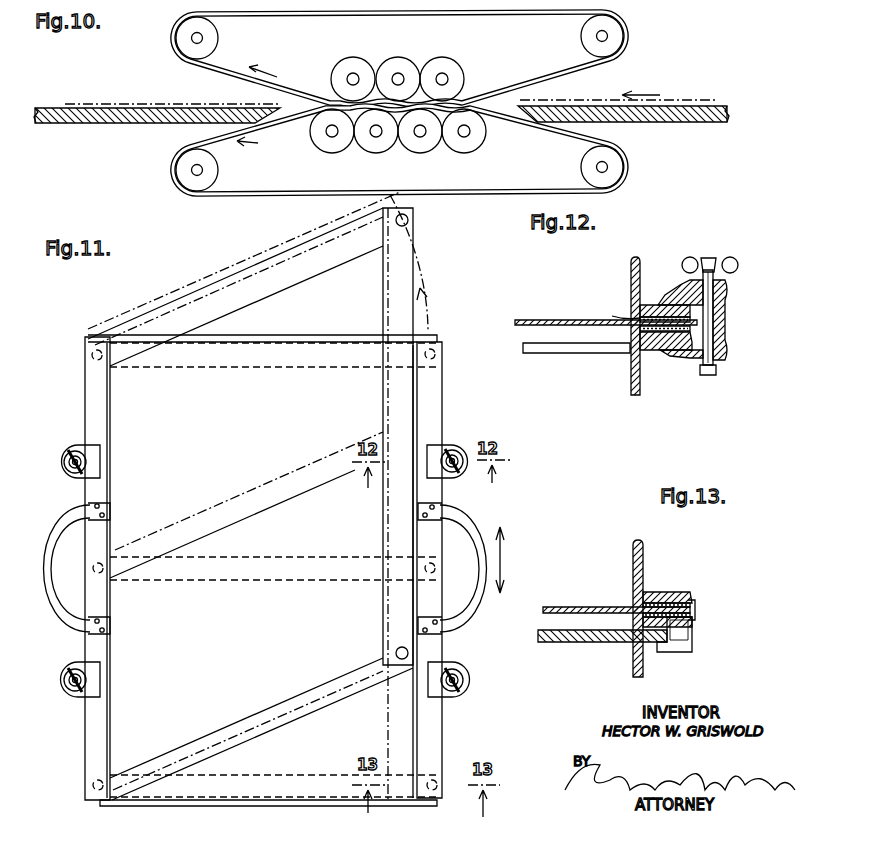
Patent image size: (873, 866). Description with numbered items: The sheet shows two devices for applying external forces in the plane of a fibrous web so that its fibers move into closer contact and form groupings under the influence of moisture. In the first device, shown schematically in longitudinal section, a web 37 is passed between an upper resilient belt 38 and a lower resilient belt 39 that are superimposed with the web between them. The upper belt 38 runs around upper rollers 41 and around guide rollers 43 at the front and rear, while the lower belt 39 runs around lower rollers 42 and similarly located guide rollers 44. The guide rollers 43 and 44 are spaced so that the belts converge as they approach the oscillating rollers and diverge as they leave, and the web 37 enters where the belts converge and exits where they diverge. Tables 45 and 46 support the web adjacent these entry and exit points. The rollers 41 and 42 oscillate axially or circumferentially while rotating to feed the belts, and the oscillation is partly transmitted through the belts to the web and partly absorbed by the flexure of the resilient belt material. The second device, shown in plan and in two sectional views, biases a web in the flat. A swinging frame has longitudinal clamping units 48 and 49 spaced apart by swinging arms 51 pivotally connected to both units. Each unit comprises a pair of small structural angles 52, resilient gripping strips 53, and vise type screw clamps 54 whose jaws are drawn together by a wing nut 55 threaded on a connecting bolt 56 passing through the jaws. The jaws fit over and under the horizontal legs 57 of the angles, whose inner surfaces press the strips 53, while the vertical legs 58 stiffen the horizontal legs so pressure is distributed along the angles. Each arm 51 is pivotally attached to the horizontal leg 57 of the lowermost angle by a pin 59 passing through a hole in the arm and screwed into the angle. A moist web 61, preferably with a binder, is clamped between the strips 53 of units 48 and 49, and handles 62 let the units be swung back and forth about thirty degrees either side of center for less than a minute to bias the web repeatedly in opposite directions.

In FIG. 10, the web 37 is at (526, 101).
In FIG. 10, the upper resilient belt 38 is at (526, 63).
In FIG. 10, the lower resilient belt 39 is at (537, 124).
In FIG. 10, the upper rollers 41 is at (383, 63).
In FIG. 10, the lower rollers 42 is at (468, 149).
In FIG. 10, the upper guide rollers 43 is at (184, 41).
In FIG. 10, the lower guide rollers 44 is at (184, 178).
In FIG. 10, the table 45 is at (680, 114).
In FIG. 10, the table 46 is at (132, 118).
In FIG. 11, the longitudinal clamping unit 48 is at (76, 761).
In FIG. 11, the longitudinal clamping unit 49 is at (455, 745).
In FIG. 11, the swinging arms 51 is at (112, 368).
In FIG. 12, the swinging arms 51 is at (557, 352).
In FIG. 13, the swinging arms 51 is at (556, 642).
In FIG. 11, the structural angles 52 is at (100, 490).
In FIG. 12, the structural angles 52 is at (644, 283).
In FIG. 13, the structural angles 52 is at (646, 592).
In FIG. 12, the resilient gripping strips 53 is at (610, 322).
In FIG. 13, the resilient gripping strips 53 is at (690, 605).
In FIG. 11, the vise type screw clamps 54 is at (61, 462).
In FIG. 12, the vise type screw clamps 54 is at (727, 300).
In FIG. 12, the wing nut 55 is at (728, 260).
In FIG. 12, the connecting bolt 56 is at (712, 322).
In FIG. 11, the horizontal legs 57 is at (97, 727).
In FIG. 12, the horizontal legs 57 is at (696, 300).
In FIG. 13, the horizontal legs 57 is at (670, 592).
In FIG. 12, the vertical legs 58 is at (637, 260).
In FIG. 13, the vertical legs 58 is at (633, 558).
In FIG. 13, the pin 59 is at (672, 645).
In FIG. 11, the moist web 61 is at (125, 640).
In FIG. 12, the moist web 61 is at (562, 324).
In FIG. 13, the moist web 61 is at (573, 598).
In FIG. 11, the handles 62 is at (61, 522).